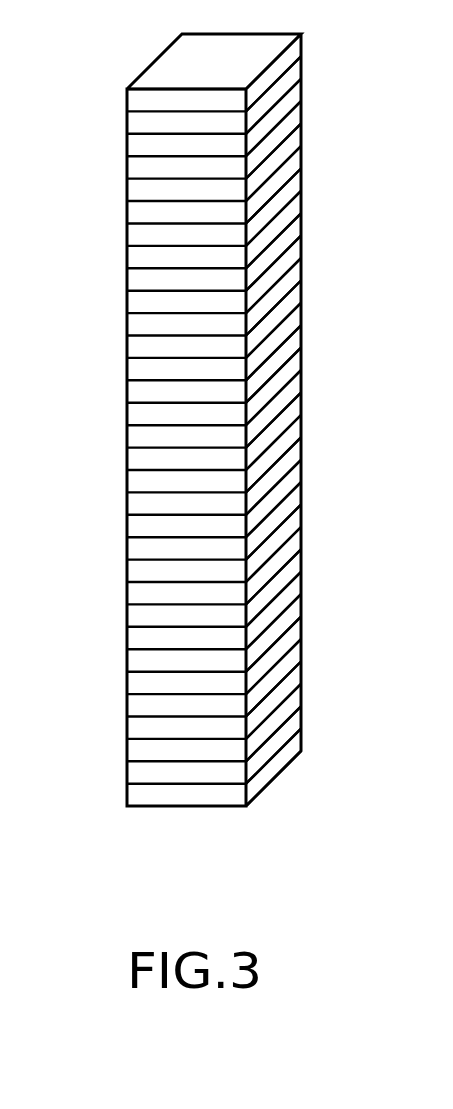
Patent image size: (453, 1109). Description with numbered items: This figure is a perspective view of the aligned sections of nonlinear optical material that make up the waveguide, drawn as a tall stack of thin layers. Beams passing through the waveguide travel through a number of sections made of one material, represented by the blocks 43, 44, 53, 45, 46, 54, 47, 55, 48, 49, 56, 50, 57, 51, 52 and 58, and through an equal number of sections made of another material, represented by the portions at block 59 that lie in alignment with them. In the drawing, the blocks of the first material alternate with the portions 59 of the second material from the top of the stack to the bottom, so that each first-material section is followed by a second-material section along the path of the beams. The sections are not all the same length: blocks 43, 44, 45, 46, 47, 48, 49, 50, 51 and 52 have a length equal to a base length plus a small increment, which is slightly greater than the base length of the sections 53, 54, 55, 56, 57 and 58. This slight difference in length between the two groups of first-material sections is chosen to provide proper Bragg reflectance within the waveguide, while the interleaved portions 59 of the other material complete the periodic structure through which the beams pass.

The block of one material 43 is at (127, 102).
The block of one material 44 is at (127, 147).
The block of one material 45 is at (127, 237).
The block of one material 46 is at (127, 282).
The block of one material 47 is at (127, 371).
The block of one material 48 is at (127, 461).
The block of one material 49 is at (127, 506).
The block of one material 50 is at (127, 595).
The block of one material 51 is at (127, 685).
The block of one material 52 is at (127, 730).
The block of one material 53 is at (127, 192).
The block of one material 54 is at (127, 326).
The block of one material 55 is at (127, 416).
The block of one material 56 is at (127, 550).
The block of one material 57 is at (127, 640).
The block of one material 58 is at (127, 774).
The portions of another material 59 is at (301, 741).